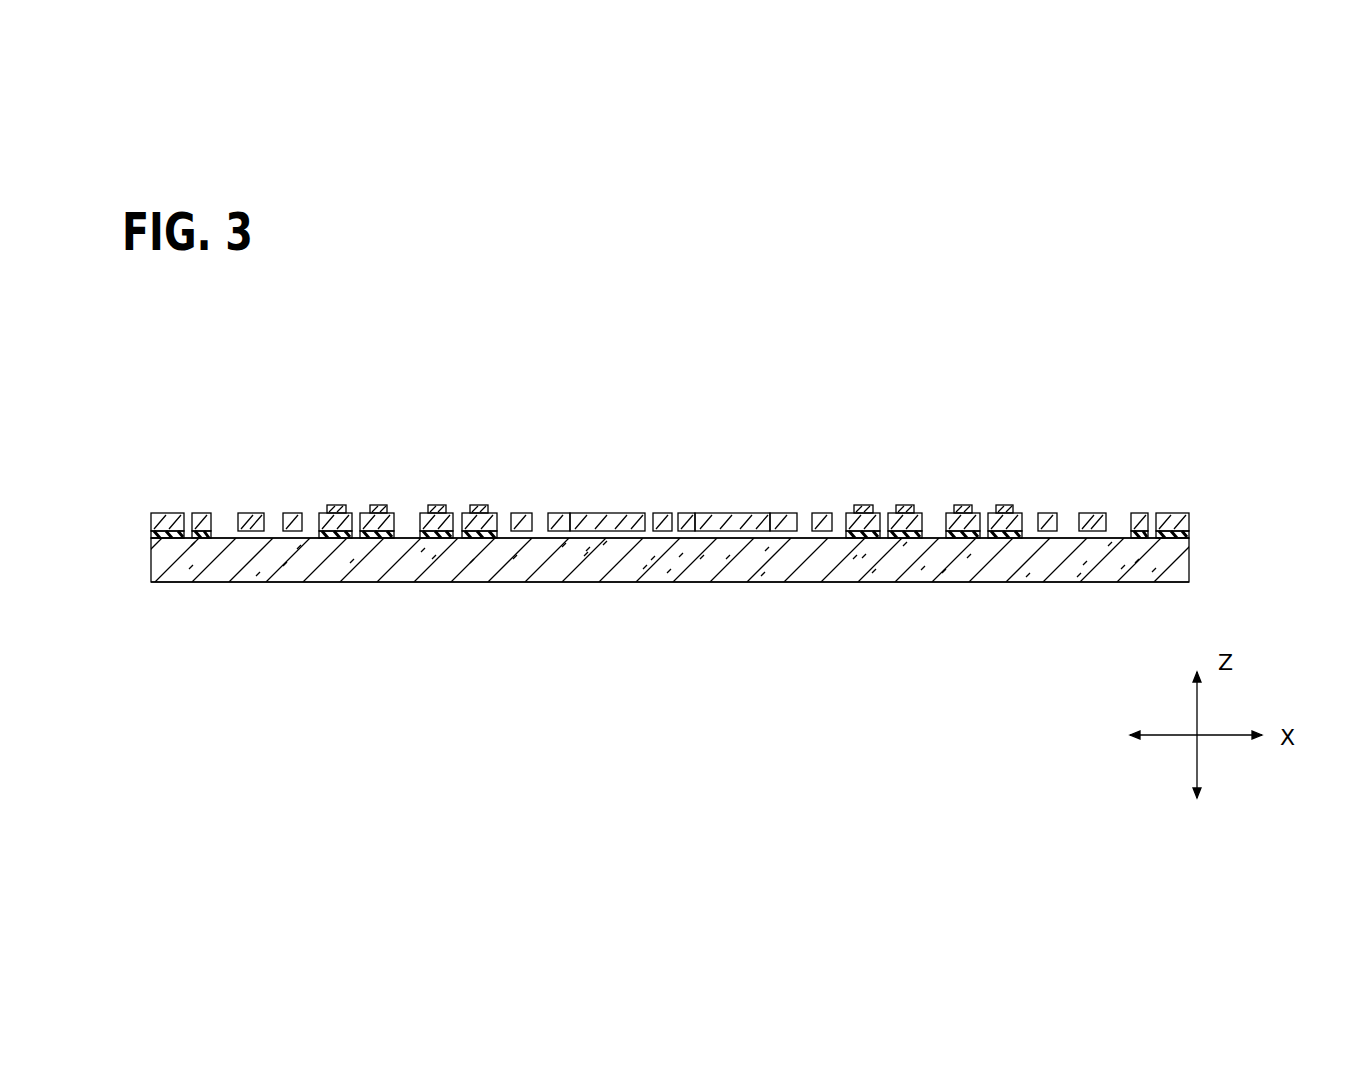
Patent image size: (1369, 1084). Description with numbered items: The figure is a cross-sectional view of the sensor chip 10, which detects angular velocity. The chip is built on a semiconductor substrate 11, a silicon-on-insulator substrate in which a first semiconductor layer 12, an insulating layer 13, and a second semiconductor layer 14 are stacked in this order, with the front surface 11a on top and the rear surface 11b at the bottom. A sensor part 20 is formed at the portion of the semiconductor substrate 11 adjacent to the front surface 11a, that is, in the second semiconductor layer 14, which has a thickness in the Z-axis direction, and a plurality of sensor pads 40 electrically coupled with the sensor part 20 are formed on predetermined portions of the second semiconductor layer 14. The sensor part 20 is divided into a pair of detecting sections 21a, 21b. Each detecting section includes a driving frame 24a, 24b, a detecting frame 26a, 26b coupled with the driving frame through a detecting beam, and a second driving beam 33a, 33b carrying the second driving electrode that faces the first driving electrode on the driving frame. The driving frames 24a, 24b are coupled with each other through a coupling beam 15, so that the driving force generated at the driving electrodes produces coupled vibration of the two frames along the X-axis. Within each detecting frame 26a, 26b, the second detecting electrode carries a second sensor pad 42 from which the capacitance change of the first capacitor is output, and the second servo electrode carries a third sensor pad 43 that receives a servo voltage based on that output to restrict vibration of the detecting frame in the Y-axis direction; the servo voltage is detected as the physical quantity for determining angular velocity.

The sensor chip 10 is at (1263, 352).
The semiconductor substrate 11 is at (1305, 472).
The front surface 11a is at (166, 513).
The rear surface 11b is at (163, 582).
The first semiconductor layer 12 is at (1189, 560).
The insulating layer 13 is at (1189, 533).
The second semiconductor layer 14 is at (1189, 517).
The coupling beam 15 is at (642, 512).
The sensor part 20 is at (1188, 418).
The sensor pads 40 is at (1118, 418).
The detecting section 21a is at (497, 420).
The detecting section 21b is at (1027, 422).
The driving frame 24a is at (253, 512).
The driving frame 24b is at (782, 512).
The detecting frame 26a is at (293, 512).
The detecting frame 26b is at (818, 512).
The second driving beam 33a is at (203, 512).
The second driving beam 33b is at (1138, 512).
The second sensor pad 42 is at (337, 504).
The third sensor pad 43 is at (375, 504).